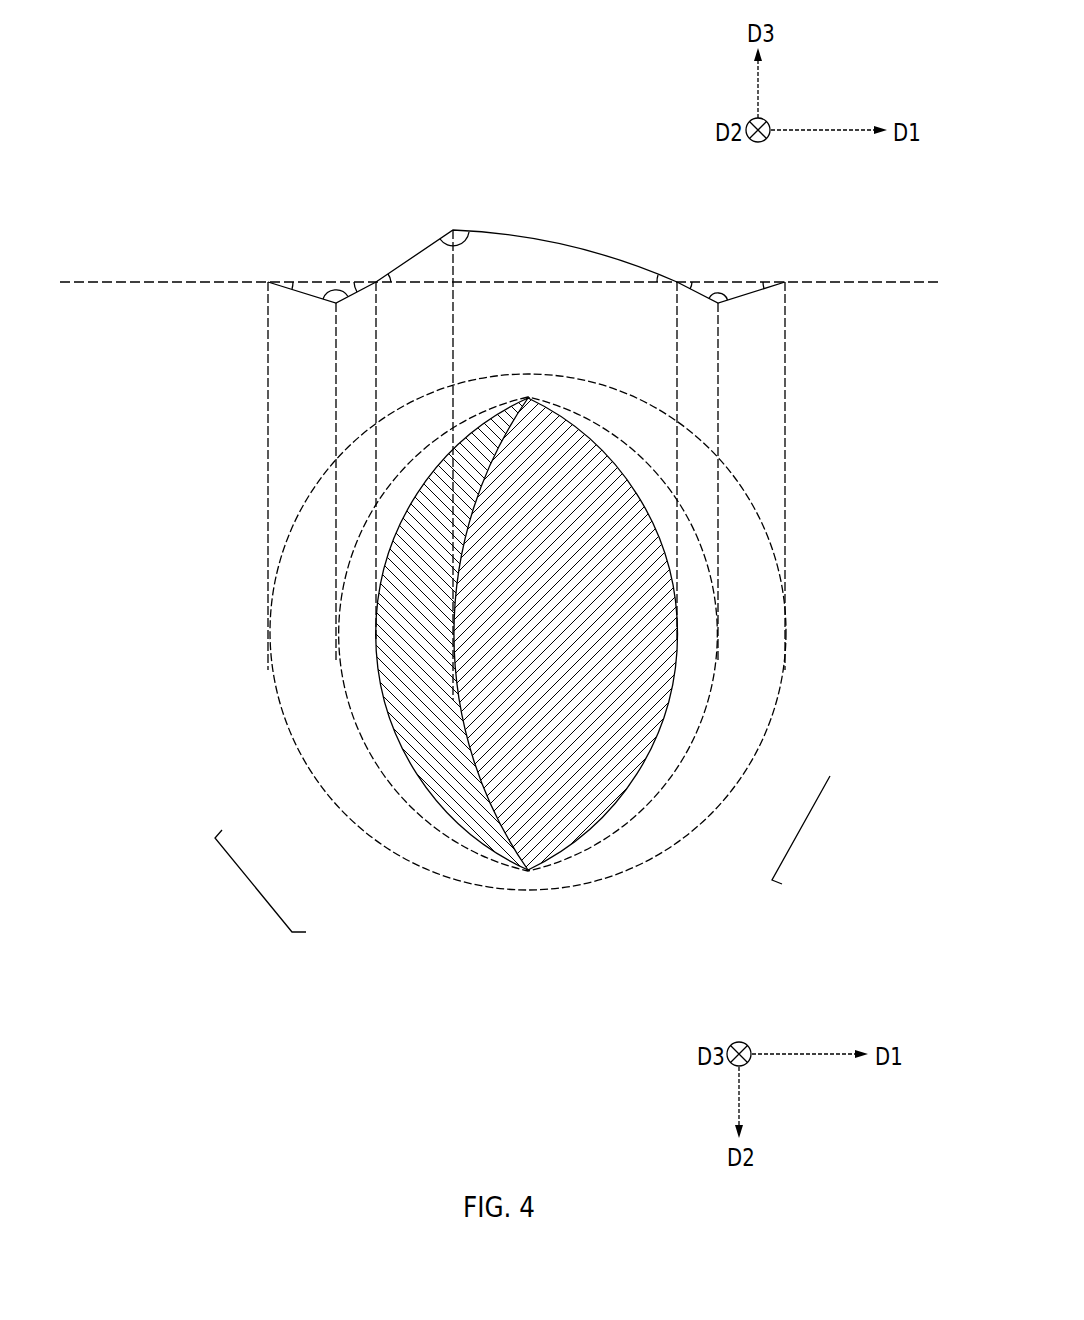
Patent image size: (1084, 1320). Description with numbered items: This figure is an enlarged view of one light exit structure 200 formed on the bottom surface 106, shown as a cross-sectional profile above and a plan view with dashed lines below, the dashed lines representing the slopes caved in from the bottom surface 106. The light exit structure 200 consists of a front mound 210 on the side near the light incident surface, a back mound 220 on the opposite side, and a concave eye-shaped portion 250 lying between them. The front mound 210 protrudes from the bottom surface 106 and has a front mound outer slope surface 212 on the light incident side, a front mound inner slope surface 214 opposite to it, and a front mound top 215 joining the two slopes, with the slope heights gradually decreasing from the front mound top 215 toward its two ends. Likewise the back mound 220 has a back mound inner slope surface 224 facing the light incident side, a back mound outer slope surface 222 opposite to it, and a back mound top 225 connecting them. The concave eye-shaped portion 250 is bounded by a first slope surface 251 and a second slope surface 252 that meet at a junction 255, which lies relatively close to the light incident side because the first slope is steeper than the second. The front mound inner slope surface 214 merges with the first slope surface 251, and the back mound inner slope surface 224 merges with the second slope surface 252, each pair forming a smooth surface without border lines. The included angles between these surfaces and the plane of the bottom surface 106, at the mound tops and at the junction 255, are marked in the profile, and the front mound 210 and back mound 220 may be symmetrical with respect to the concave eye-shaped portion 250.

The light exit structure 200 is at (176, 110).
The bottom surface 106 is at (843, 290).
The concave eye-shaped portion 250 is at (548, 277).
The first slope surface 251 is at (436, 658).
The second slope surface 252 is at (573, 658).
The junction 255 is at (455, 229).
The front mound 210 is at (259, 881).
The front mound outer slope surface 212 is at (345, 773).
The front mound inner slope surface 214 is at (362, 700).
The front mound top 215 is at (397, 798).
The back mound 220 is at (811, 830).
The back mound outer slope surface 222 is at (690, 795).
The back mound inner slope surface 224 is at (687, 727).
The back mound top 225 is at (637, 813).